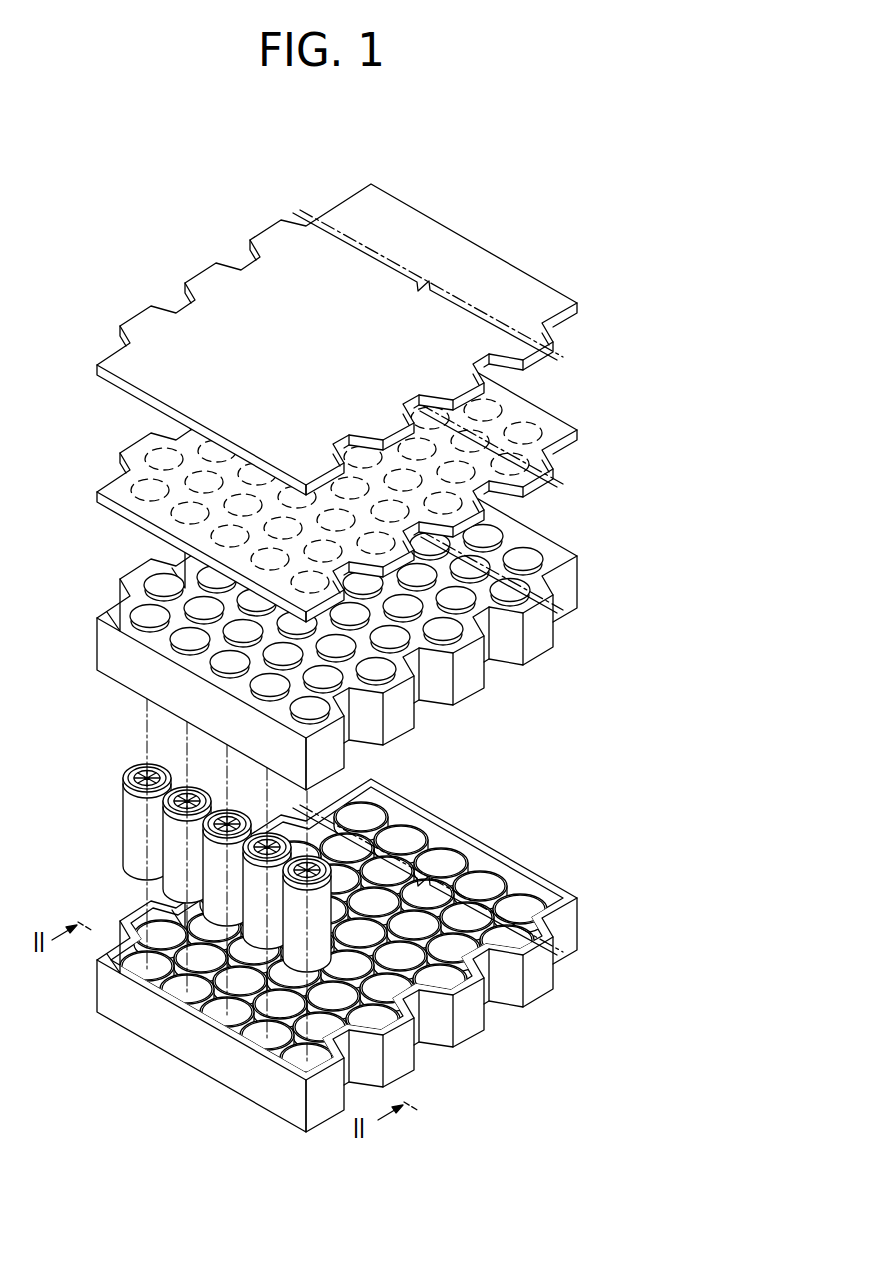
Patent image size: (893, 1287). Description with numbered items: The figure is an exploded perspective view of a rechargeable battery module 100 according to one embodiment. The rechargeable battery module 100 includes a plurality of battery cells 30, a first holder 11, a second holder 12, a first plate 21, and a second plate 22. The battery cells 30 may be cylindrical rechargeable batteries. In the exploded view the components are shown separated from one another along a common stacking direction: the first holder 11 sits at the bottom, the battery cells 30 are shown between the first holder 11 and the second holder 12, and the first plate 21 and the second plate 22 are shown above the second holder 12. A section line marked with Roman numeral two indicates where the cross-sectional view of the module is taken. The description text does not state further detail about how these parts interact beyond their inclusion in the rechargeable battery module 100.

The rechargeable battery module 100 is at (153, 238).
The first holder 11 is at (100, 995).
The second holder 12 is at (97, 648).
The first plate 21 is at (97, 493).
The second plate 22 is at (97, 368).
The battery cells 30 is at (213, 883).